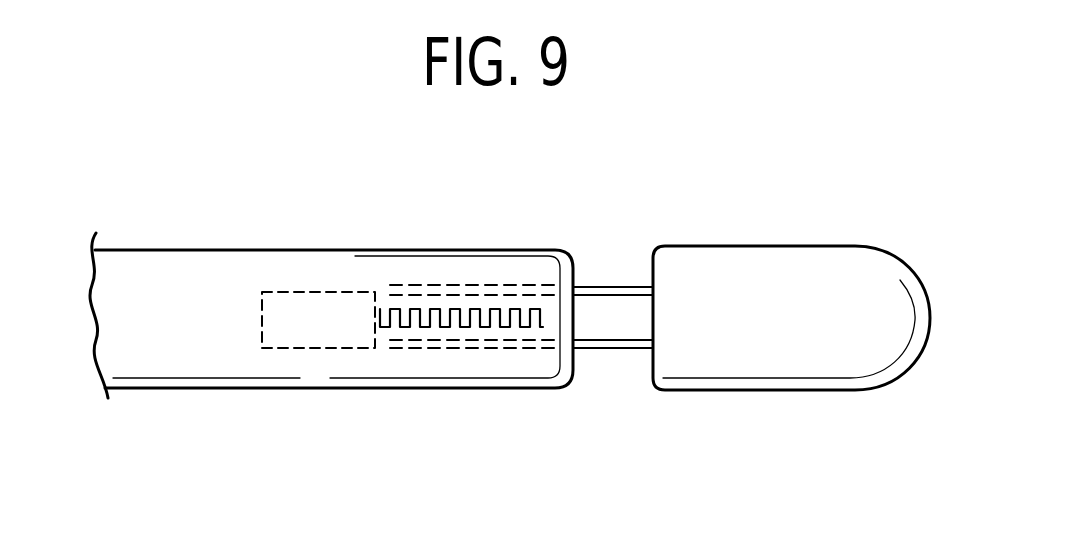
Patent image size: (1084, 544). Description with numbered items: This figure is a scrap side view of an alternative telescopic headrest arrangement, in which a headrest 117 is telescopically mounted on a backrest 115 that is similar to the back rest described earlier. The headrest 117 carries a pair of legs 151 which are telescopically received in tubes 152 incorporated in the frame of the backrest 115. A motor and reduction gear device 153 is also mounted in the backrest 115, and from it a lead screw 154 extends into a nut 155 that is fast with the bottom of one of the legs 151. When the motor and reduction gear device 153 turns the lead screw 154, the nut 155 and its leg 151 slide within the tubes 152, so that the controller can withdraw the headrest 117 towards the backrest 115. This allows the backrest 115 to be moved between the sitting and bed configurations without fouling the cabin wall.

The backrest 115 is at (192, 280).
The headrest 117 is at (770, 285).
The legs 151 is at (610, 350).
The tubes 152 is at (440, 293).
The motor and reduction gear device 153 is at (315, 330).
The lead screw 154 is at (408, 310).
The nut 155 is at (480, 330).